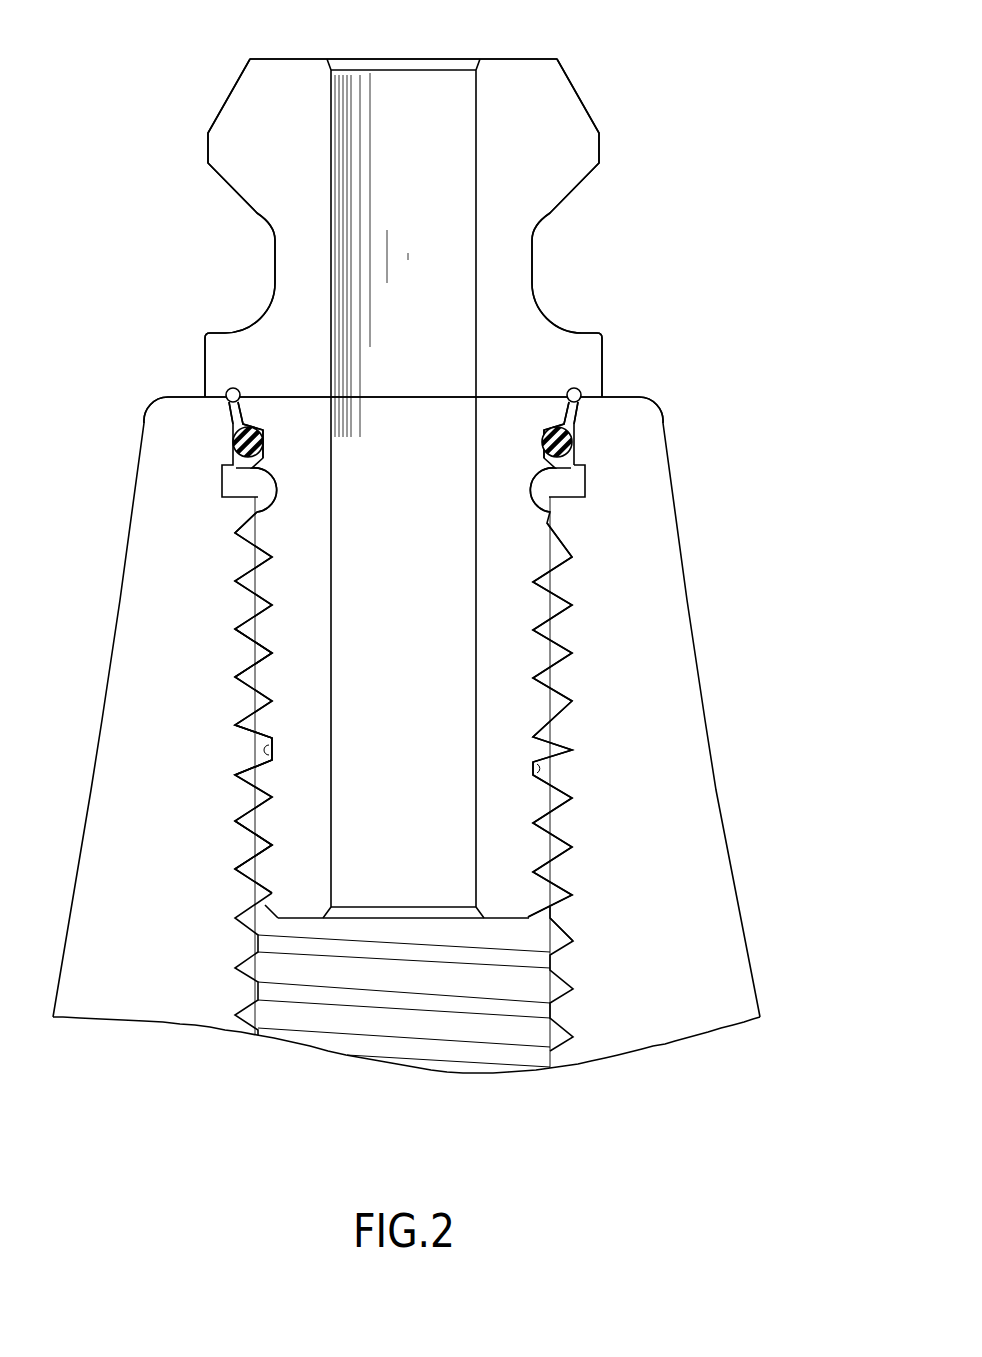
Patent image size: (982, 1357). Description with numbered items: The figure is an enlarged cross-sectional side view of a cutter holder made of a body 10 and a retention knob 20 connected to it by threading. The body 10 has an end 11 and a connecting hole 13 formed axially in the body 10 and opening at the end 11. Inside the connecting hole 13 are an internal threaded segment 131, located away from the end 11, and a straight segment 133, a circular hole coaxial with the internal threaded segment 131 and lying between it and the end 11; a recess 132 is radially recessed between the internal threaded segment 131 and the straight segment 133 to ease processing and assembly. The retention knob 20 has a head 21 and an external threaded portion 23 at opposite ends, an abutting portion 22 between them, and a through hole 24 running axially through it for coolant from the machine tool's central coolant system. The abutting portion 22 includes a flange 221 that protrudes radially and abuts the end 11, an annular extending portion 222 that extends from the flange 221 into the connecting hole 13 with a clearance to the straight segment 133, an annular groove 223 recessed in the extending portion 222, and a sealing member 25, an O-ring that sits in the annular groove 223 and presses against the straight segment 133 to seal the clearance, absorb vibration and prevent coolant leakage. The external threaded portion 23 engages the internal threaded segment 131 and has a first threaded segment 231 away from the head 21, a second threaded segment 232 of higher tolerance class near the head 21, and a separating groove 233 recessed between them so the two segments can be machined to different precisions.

The body 10 is at (750, 809).
The end 11 is at (618, 398).
The connecting hole 13 is at (542, 1042).
The internal threaded segment 131 is at (556, 944).
The recess 132 is at (576, 502).
The straight segment 133 is at (552, 437).
The retention knob 20 is at (150, 190).
The head 21 is at (242, 112).
The abutting portion 22 is at (196, 366).
The flange 221 is at (217, 345).
The extending portion 222 is at (242, 472).
The annular groove 223 is at (250, 425).
The external threaded portion 23 is at (243, 689).
The first threaded segment 231 is at (250, 822).
The second threaded segment 232 is at (250, 628).
The separating groove 233 is at (272, 738).
The through hole 24 is at (476, 90).
The sealing member 25 is at (548, 444).